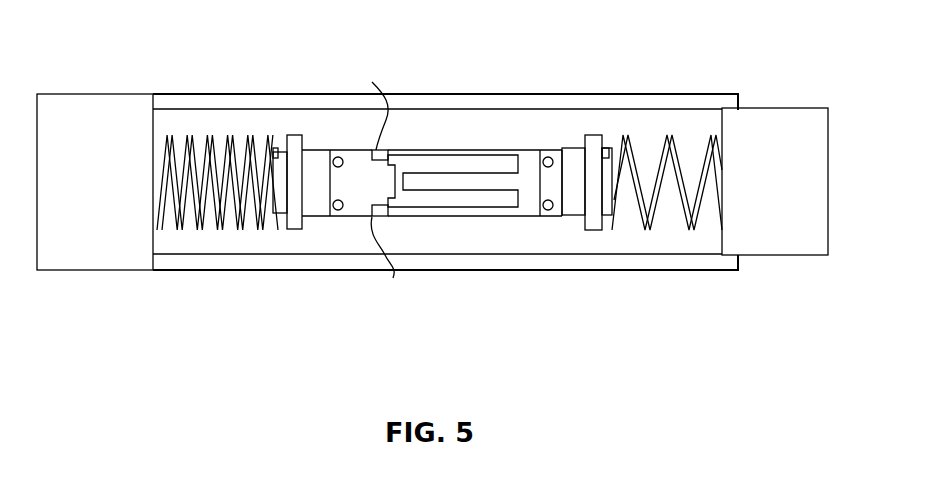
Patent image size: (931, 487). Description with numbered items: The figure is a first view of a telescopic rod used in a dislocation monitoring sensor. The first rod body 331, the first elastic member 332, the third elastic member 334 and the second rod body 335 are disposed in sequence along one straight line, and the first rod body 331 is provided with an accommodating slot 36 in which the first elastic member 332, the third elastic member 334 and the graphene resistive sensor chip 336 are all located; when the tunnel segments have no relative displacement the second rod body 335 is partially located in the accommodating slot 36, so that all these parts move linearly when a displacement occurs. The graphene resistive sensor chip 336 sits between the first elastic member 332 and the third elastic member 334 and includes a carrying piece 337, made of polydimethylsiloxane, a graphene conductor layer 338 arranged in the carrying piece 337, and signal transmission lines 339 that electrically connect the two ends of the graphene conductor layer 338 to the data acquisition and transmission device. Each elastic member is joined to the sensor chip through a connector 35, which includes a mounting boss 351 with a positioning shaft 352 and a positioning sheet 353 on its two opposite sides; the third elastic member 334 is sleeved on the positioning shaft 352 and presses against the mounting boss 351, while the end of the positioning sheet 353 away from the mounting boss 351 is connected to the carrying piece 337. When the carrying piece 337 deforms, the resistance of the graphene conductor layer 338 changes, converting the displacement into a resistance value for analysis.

The connector 35 is at (601, 256).
The accommodating slot 36 is at (532, 105).
The first rod body 331 is at (56, 124).
The first elastic member 332 is at (212, 138).
The third elastic member 334 is at (653, 138).
The second rod body 335 is at (818, 127).
The graphene resistive sensor chip 336 is at (432, 229).
The carrying piece 337 is at (528, 205).
The graphene conductor layer 338 is at (457, 209).
The signal transmission lines 339 is at (378, 206).
The mounting boss 351 is at (592, 215).
The positioning shaft 352 is at (607, 200).
The positioning sheet 353 is at (574, 198).